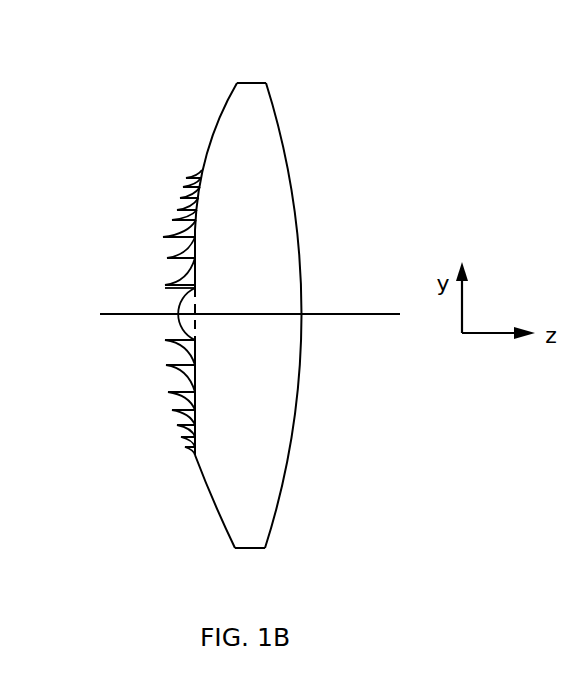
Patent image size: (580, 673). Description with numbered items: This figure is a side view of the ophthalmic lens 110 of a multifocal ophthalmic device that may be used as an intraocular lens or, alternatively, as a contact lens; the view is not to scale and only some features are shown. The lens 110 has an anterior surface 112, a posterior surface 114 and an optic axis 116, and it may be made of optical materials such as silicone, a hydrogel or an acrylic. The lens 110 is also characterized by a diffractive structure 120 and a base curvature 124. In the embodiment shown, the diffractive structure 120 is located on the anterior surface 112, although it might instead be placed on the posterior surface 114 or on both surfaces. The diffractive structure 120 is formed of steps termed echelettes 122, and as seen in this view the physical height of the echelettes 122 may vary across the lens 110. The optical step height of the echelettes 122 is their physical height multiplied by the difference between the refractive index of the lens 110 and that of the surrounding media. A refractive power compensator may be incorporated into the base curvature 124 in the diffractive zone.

The ophthalmic lens 110 is at (224, 41).
The anterior surface 112 is at (198, 517).
The posterior surface 114 is at (304, 517).
The optic axis 116 is at (100, 314).
The diffractive structure 120 is at (125, 259).
The echelettes 122 is at (168, 238).
The base curvature 124 is at (212, 295).